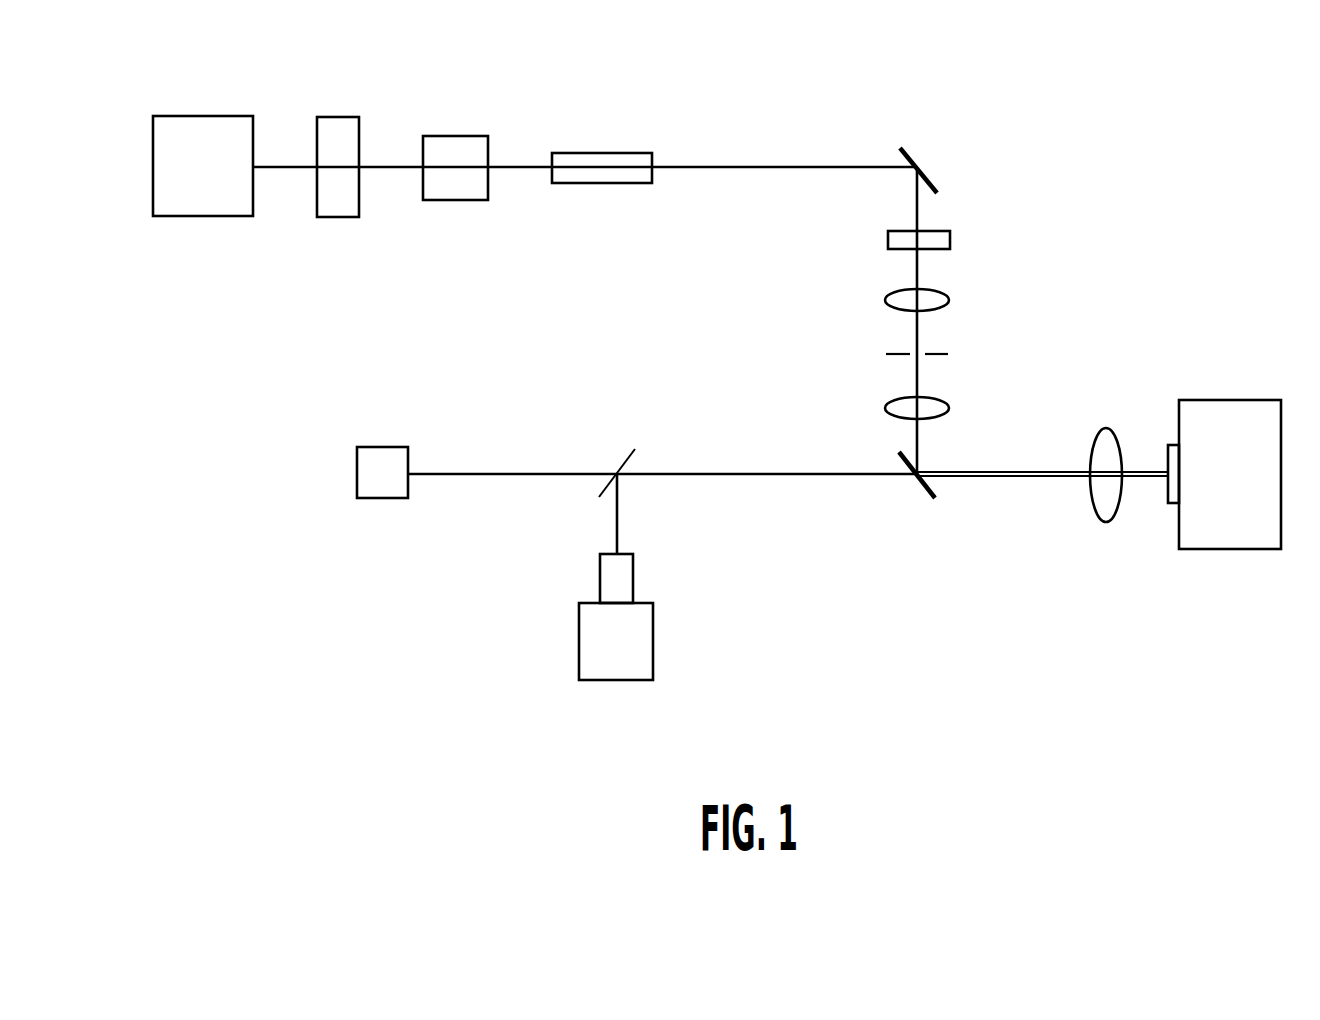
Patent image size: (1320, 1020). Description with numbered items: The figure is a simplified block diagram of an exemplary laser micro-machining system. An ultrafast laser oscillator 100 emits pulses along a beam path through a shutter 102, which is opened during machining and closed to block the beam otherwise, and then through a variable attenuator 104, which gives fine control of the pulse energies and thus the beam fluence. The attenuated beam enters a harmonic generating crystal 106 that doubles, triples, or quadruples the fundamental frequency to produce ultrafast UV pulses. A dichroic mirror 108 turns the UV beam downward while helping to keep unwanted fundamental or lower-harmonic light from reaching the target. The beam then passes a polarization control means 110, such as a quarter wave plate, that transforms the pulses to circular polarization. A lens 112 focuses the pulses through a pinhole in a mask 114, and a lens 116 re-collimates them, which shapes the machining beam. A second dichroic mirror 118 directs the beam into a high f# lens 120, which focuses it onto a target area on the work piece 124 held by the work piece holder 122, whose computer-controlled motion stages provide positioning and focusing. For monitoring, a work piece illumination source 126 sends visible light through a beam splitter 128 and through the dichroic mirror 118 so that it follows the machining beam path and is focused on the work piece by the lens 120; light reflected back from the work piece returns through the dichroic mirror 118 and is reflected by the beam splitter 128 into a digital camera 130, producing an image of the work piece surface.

The ultrafast laser oscillator 100 is at (197, 116).
The shutter 102 is at (338, 117).
The variable attenuator 104 is at (455, 136).
The harmonic generating crystal 106 is at (588, 153).
The dichroic mirror 108 is at (916, 166).
The polarization control means 110 is at (940, 231).
The lens 112 is at (890, 292).
The mask 114 is at (948, 354).
The lens 116 is at (895, 398).
The dichroic mirror 118 is at (921, 487).
The high f# lens 120 is at (1092, 503).
The work piece holder 122 is at (1203, 400).
The work piece 124 is at (1173, 503).
The work piece illumination source 126 is at (378, 447).
The beam splitter 128 is at (618, 462).
The digital camera 130 is at (579, 638).